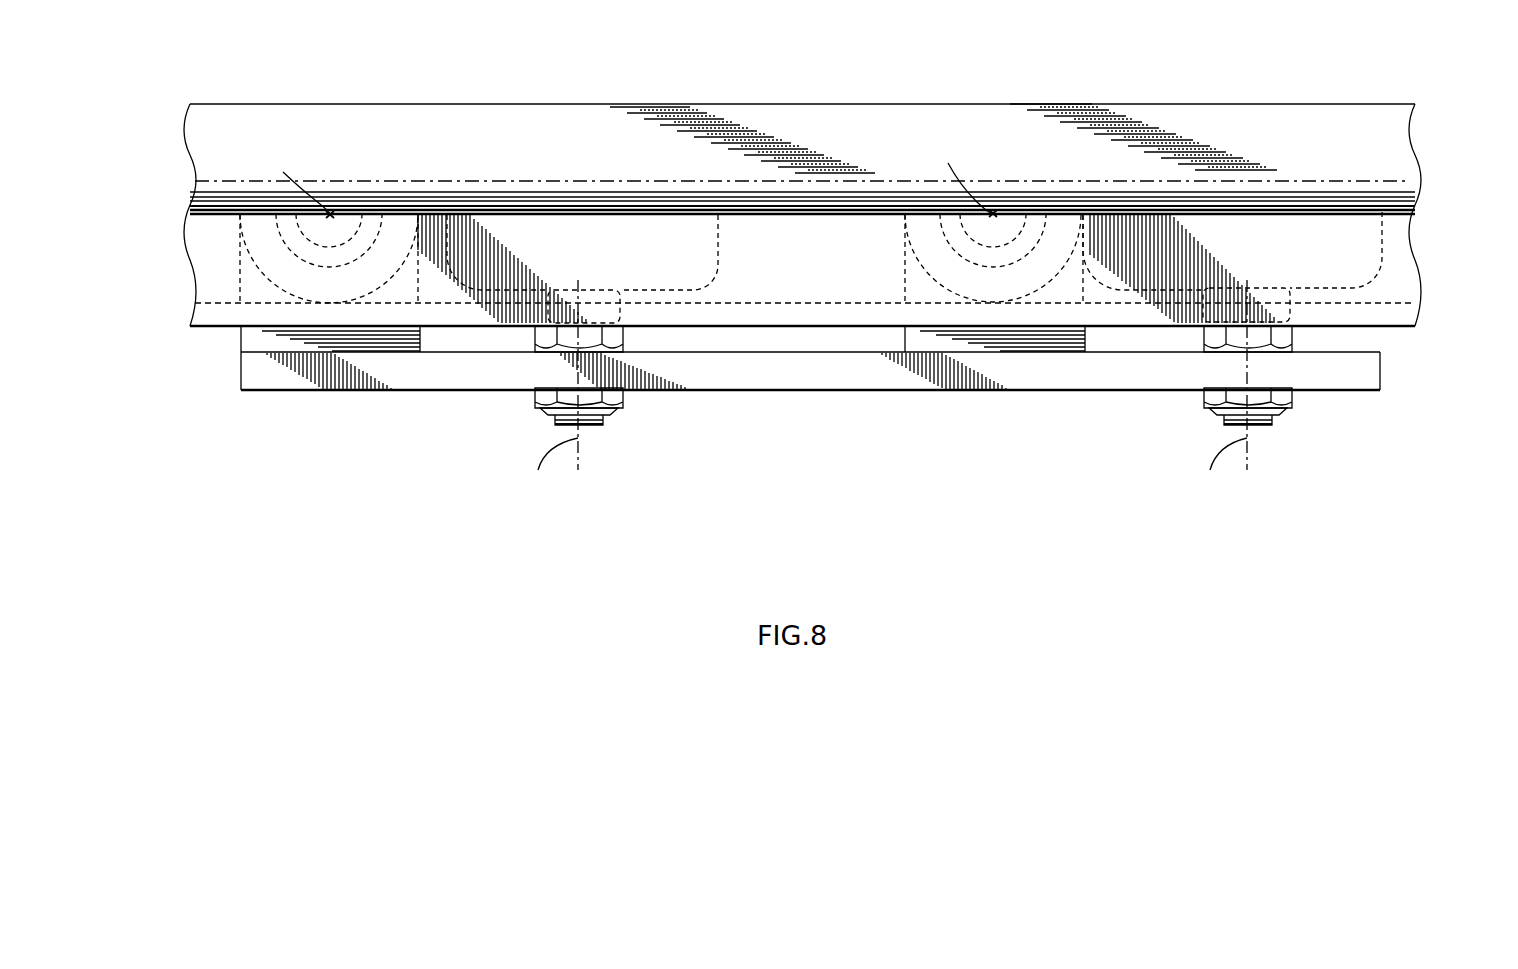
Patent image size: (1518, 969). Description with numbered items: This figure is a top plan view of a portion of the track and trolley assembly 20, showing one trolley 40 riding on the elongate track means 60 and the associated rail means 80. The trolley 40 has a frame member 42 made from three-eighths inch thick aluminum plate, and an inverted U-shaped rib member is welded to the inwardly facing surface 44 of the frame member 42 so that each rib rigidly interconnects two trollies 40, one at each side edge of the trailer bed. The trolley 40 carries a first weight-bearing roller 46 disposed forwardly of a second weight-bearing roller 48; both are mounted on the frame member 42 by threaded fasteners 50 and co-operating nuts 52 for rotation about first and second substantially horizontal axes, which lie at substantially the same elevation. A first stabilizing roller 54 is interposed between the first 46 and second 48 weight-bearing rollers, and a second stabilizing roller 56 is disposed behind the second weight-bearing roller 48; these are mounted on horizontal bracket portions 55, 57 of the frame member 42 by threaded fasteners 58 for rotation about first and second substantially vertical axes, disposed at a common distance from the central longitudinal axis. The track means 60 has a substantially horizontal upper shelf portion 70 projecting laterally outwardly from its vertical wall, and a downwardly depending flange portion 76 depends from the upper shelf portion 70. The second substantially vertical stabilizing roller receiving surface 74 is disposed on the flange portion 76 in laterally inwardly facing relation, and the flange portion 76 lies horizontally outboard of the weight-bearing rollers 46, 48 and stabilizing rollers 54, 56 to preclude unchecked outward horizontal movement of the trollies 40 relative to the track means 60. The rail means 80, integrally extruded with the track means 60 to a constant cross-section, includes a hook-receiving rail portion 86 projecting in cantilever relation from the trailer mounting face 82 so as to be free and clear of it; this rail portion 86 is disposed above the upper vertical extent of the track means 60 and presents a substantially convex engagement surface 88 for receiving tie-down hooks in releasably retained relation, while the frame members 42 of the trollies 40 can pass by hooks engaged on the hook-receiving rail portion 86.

The track and trolley assembly 20 is at (603, 540).
The trolley 40 is at (841, 458).
The frame member 42 is at (1038, 372).
The inwardly facing surface 44 is at (768, 324).
The first weight-bearing roller 46 is at (708, 247).
The second weight-bearing roller 48 is at (1325, 225).
The threaded fastener 50 is at (598, 425).
The nut 52 is at (613, 338).
The first stabilizing roller 54 is at (938, 265).
The horizontal bracket portion 55 is at (1065, 336).
The second stabilizing roller 56 is at (262, 256).
The horizontal bracket portion 57 is at (392, 343).
The threaded fastener 58 is at (347, 222).
The elongate track means 60 is at (1410, 232).
The upper shelf portion 70 is at (1400, 270).
The second substantially vertical stabilizing roller receiving surface 74 is at (400, 306).
The downwardly depending flange portion 76 is at (330, 322).
The rail means 80 is at (731, 104).
The trailer mounting face 82 is at (904, 100).
The hook-receiving rail portion 86 is at (815, 165).
The convex engagement surface 88 is at (616, 172).